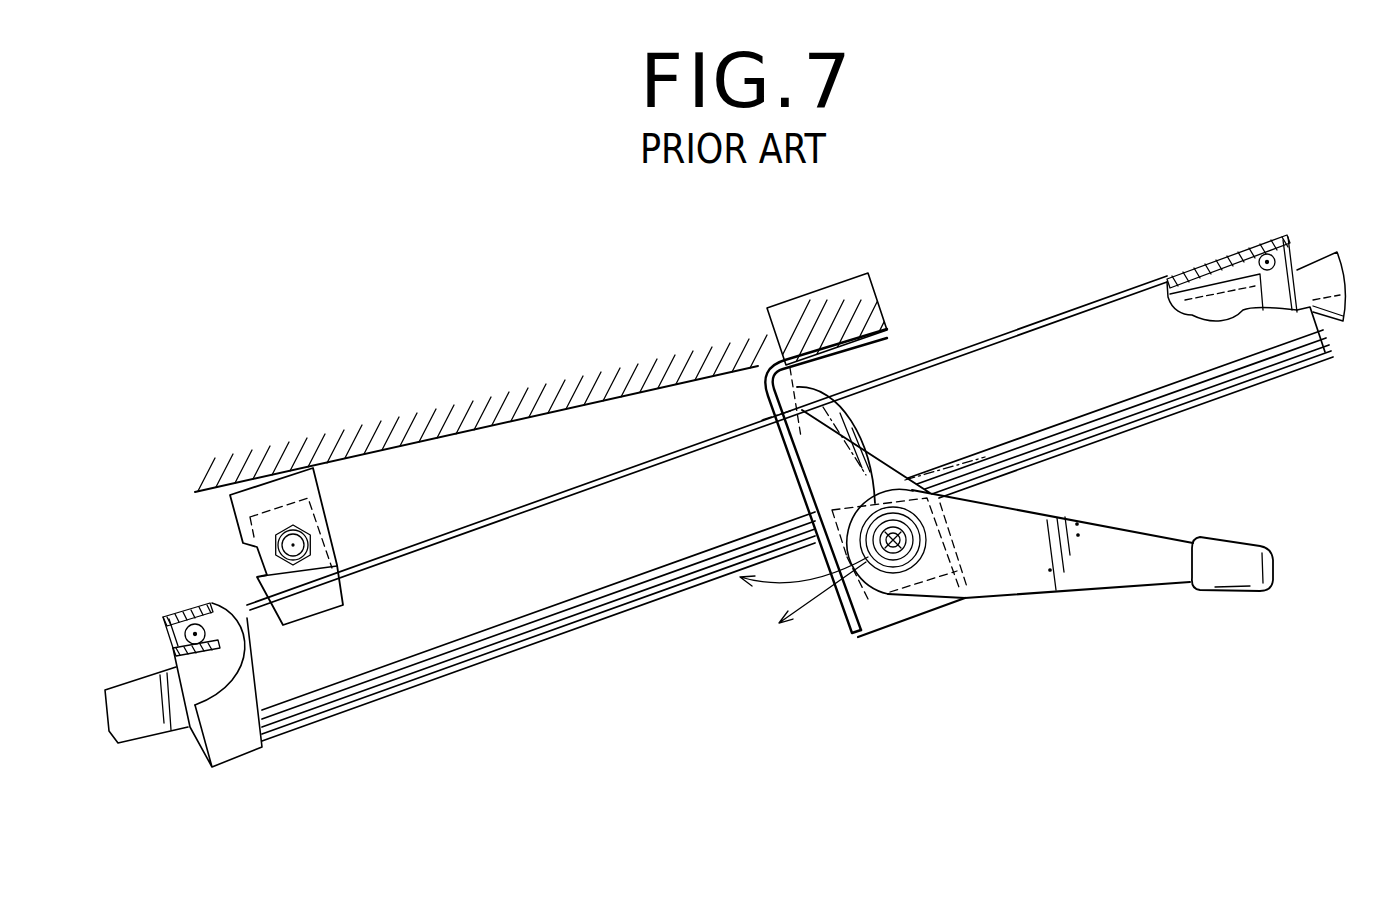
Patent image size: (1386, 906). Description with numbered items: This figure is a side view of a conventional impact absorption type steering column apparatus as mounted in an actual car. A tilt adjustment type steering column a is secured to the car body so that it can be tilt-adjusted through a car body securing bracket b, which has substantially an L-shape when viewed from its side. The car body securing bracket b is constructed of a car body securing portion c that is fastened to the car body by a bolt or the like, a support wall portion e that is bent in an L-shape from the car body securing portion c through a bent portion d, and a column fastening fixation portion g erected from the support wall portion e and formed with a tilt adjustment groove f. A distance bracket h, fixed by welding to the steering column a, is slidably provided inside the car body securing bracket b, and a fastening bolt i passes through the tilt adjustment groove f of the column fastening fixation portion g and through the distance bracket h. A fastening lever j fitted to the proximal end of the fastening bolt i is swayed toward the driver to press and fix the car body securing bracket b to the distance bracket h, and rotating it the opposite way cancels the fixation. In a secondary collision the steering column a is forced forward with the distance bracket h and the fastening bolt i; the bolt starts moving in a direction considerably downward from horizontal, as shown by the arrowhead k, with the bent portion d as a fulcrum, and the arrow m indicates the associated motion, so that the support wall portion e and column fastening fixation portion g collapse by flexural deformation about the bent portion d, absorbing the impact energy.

The tilt adjustment type steering column a is at (1043, 322).
The car body securing bracket b is at (852, 345).
The car body securing portion c is at (853, 326).
The bent portion d is at (765, 372).
The support wall portion e is at (795, 478).
The tilt adjustment groove f is at (963, 590).
The column fastening fixation portion g is at (921, 618).
The distance bracket h is at (870, 603).
The fastening bolt i is at (888, 512).
The fastening lever j is at (1078, 592).
The arrowhead k is at (799, 620).
The direction arrow m is at (765, 588).